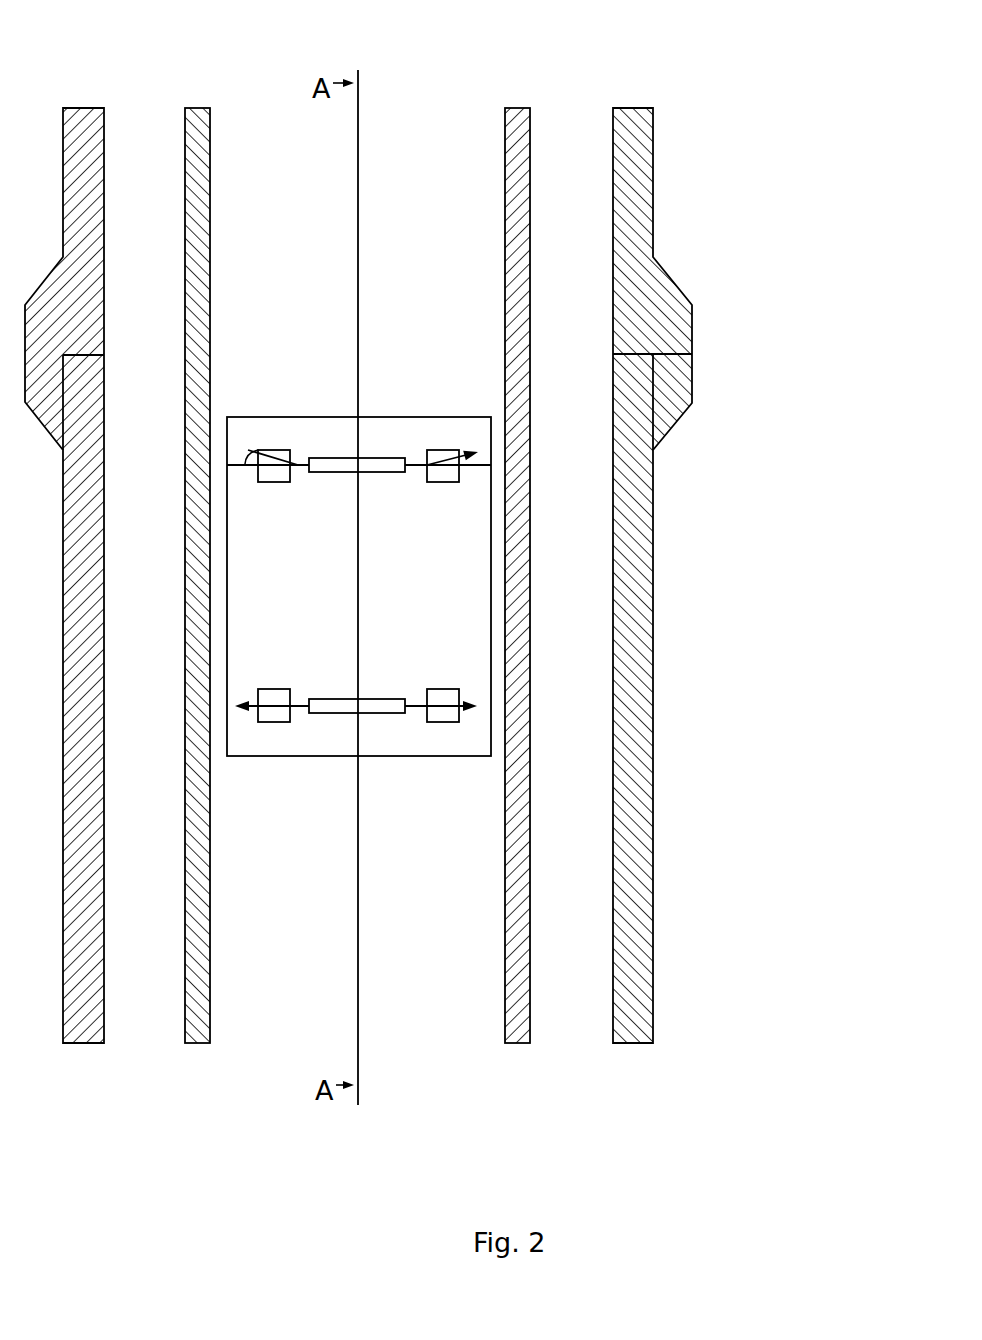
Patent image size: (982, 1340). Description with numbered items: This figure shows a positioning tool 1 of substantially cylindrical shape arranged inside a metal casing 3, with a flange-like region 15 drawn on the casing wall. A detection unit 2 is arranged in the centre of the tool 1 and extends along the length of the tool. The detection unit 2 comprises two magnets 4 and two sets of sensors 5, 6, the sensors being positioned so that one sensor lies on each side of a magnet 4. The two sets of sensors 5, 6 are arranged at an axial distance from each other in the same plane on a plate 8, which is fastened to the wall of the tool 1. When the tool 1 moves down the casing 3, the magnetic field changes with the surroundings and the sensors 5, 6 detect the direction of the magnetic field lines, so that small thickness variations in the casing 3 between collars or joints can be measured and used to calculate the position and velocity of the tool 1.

The positioning tool 1 is at (436, 524).
The detection unit 2 is at (375, 429).
The casing 3 is at (633, 980).
The flange 15 is at (692, 354).
The plate 8 is at (428, 627).
The first sensor 5 is at (447, 472).
The second sensor 6 is at (447, 695).
The magnet 4 is at (385, 466).